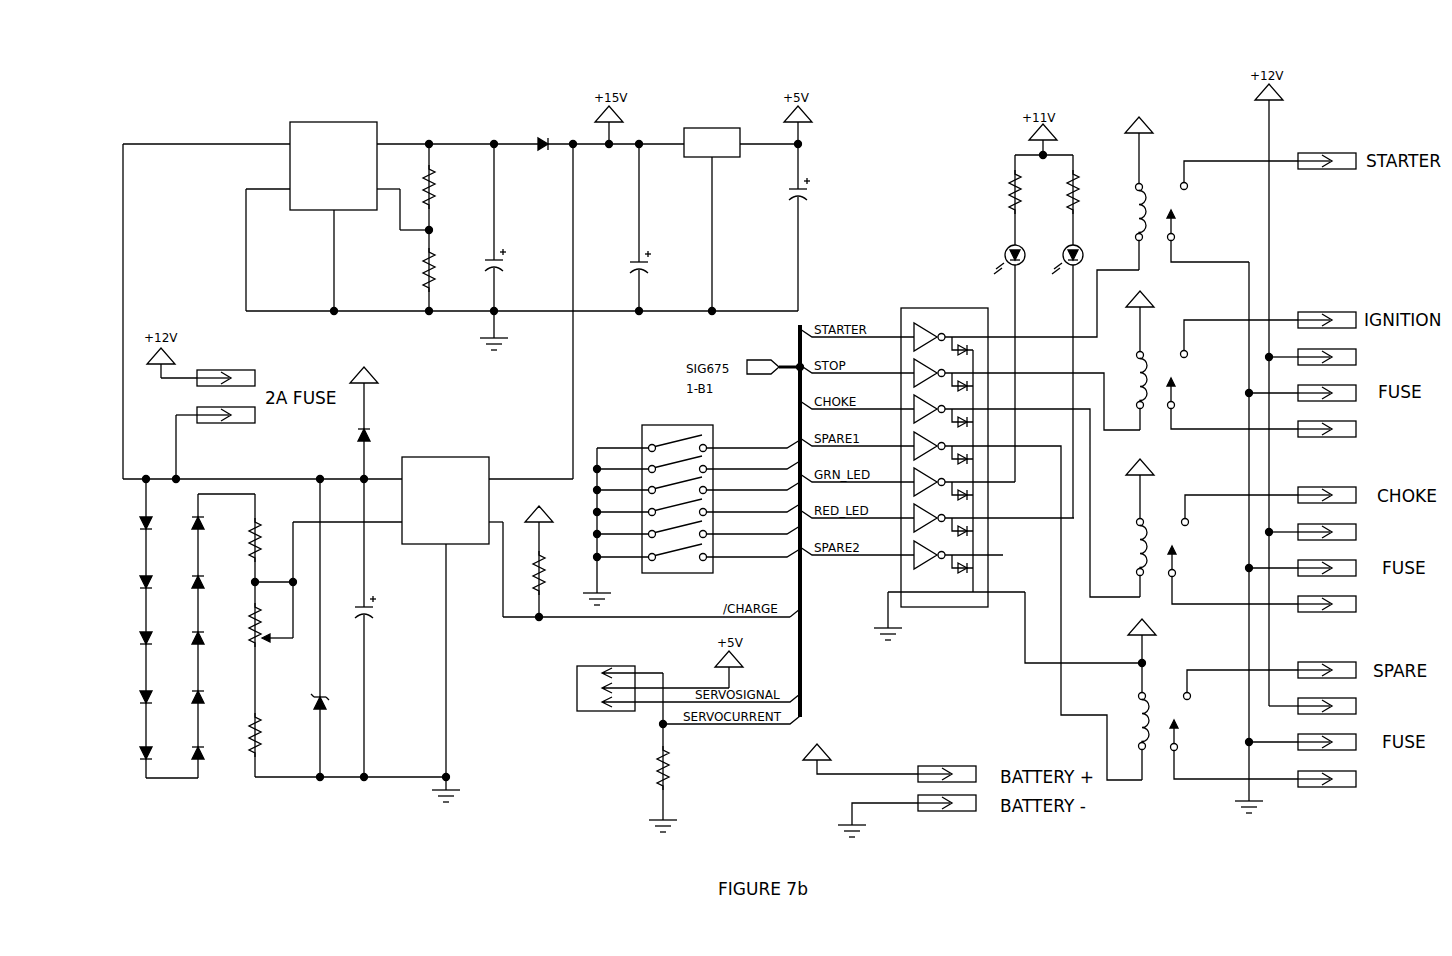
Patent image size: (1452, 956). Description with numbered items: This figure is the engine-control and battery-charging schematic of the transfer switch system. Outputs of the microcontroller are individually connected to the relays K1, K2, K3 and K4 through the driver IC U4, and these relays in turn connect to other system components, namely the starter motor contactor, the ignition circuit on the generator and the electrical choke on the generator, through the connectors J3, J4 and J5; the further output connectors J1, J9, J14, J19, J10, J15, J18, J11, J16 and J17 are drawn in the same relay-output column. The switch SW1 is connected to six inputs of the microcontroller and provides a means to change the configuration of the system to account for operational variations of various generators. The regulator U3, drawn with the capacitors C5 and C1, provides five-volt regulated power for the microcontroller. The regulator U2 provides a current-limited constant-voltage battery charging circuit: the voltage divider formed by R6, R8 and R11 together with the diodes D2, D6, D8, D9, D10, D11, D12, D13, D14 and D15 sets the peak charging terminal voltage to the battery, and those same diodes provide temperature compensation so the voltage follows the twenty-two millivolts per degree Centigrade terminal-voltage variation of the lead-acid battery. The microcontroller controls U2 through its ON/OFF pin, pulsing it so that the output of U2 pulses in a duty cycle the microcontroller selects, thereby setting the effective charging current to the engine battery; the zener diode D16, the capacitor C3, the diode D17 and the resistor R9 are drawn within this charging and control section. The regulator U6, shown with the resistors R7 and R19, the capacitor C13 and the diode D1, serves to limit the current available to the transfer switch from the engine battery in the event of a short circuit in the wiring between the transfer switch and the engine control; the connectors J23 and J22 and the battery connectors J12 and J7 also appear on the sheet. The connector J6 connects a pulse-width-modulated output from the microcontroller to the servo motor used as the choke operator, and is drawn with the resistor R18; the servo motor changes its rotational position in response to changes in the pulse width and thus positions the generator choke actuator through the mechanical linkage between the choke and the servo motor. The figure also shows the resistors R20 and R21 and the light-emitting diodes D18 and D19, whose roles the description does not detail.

The regulator U6 is at (330, 290).
The resistor R7 is at (443, 187).
The resistor R19 is at (420, 272).
The capacitor C13 is at (488, 246).
The diode D1 is at (609, 135).
The capacitor C5 is at (633, 228).
The regulator U3 is at (741, 212).
The capacitor C1 is at (792, 227).
The connector J23 is at (226, 370).
The connector J22 is at (215, 435).
The diode D2 is at (139, 526).
The diode D6 is at (139, 585).
The diode D8 is at (139, 641).
The diode D9 is at (139, 700).
The diode D10 is at (139, 755).
The diode D15 is at (191, 525).
The diode D14 is at (191, 584).
The diode D13 is at (191, 640).
The diode D12 is at (191, 699).
The diode D11 is at (191, 755).
The resistor R6 is at (229, 540).
The resistor R11 is at (265, 606).
The resistor R8 is at (247, 733).
The zener diode D16 is at (317, 628).
The capacitor C3 is at (377, 628).
The diode D17 is at (366, 417).
The regulator U2 is at (400, 609).
The resistor R9 is at (536, 556).
The switch SW1 is at (691, 506).
The driver IC U4 is at (1008, 525).
The resistor R20 is at (1008, 200).
The resistor R21 is at (1066, 200).
The green LED D18 is at (1009, 363).
The red LED D19 is at (1067, 381).
The relay K4 is at (1207, 186).
The relay K1 is at (1211, 353).
The relay K2 is at (1211, 524).
The relay K3 is at (1212, 692).
The starter connector J1 is at (1327, 155).
The connector J3 is at (1327, 314).
The fuse connector J9 is at (1312, 351).
The fuse connector J14 is at (1302, 387).
The connector J19 is at (1327, 423).
The connector J4 is at (1327, 489).
The fuse connector J10 is at (1312, 526).
The fuse connector J15 is at (1302, 562).
The connector J18 is at (1327, 598).
The connector J5 is at (1327, 664).
The fuse connector J11 is at (1312, 700).
The fuse connector J16 is at (1302, 736).
The connector J17 is at (1327, 773).
The connector J6 is at (688, 703).
The resistor R18 is at (724, 752).
The battery + connector J12 is at (889, 756).
The battery - connector J7 is at (907, 816).